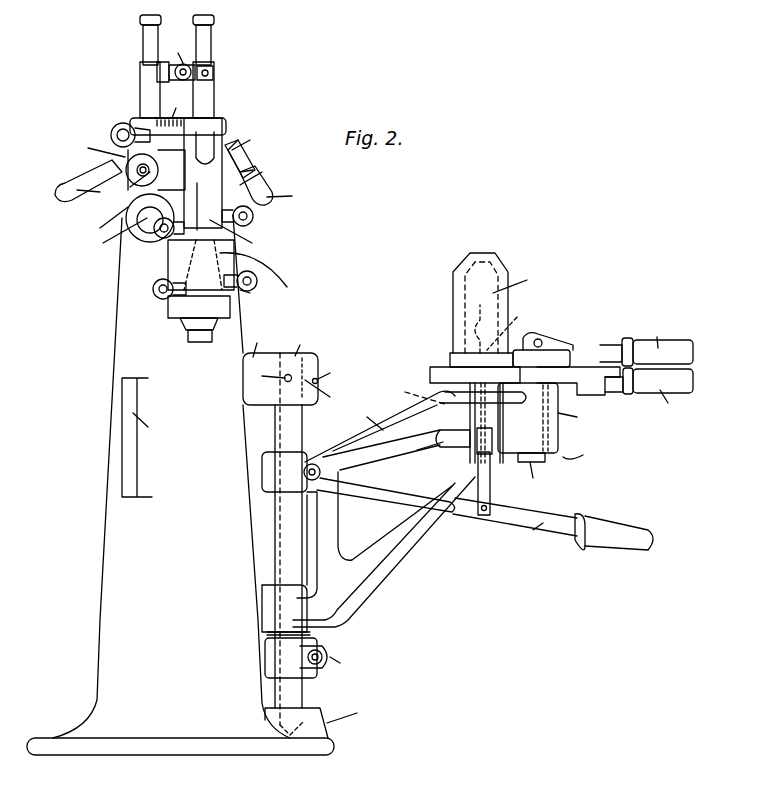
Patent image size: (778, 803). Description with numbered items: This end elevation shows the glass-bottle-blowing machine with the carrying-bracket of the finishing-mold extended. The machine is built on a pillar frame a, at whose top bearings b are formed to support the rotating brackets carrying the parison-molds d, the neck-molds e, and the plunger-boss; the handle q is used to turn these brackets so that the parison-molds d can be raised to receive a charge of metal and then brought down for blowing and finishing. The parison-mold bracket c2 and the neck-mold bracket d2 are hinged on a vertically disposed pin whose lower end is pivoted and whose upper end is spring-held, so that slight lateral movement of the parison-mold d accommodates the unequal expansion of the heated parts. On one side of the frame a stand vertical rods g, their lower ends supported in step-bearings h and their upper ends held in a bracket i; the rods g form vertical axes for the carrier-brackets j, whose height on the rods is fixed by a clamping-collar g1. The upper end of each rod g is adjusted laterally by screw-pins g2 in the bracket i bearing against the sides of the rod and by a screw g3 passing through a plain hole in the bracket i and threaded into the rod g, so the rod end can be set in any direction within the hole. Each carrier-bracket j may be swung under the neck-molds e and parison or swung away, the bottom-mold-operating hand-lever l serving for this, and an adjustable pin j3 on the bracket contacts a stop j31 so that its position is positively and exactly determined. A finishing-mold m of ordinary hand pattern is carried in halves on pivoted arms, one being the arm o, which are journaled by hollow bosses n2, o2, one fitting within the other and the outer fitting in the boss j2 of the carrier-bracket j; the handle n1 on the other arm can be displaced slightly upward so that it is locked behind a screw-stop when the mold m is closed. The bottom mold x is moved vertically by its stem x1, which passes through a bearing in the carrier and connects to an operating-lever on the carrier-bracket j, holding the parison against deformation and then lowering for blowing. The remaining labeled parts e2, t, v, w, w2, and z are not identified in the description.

The frame a is at (180, 485).
The bearings b is at (118, 218).
The parison-mold bracket c2 is at (117, 236).
The parison-mold d is at (232, 271).
The neck-mold bracket d2 is at (211, 310).
The neck-mold e is at (178, 174).
The roller e2 is at (214, 230).
The vertical rod g is at (280, 528).
The clamping-collar g1 is at (313, 655).
The screw-pin g2 is at (267, 374).
The screw g3 is at (326, 382).
The step-bearing h is at (314, 717).
The bracket i is at (253, 338).
The carrier-bracket j is at (368, 511).
The boss j2 is at (549, 393).
The adjustable pin j3 is at (407, 449).
The stop j31 is at (154, 421).
The bottom-mold-operating hand-lever l is at (485, 508).
The finishing-mold m is at (489, 318).
The handle n1 is at (646, 337).
The hollow boss n2 is at (533, 476).
The pivoted arm o is at (649, 396).
The hollow boss o2 is at (578, 415).
The handle q is at (177, 66).
The arm t is at (252, 162).
The lever v is at (147, 175).
The roller w is at (108, 140).
The handle w2 is at (82, 181).
The bottom mold x is at (500, 382).
The stem x1 is at (454, 384).
The rack z is at (170, 106).